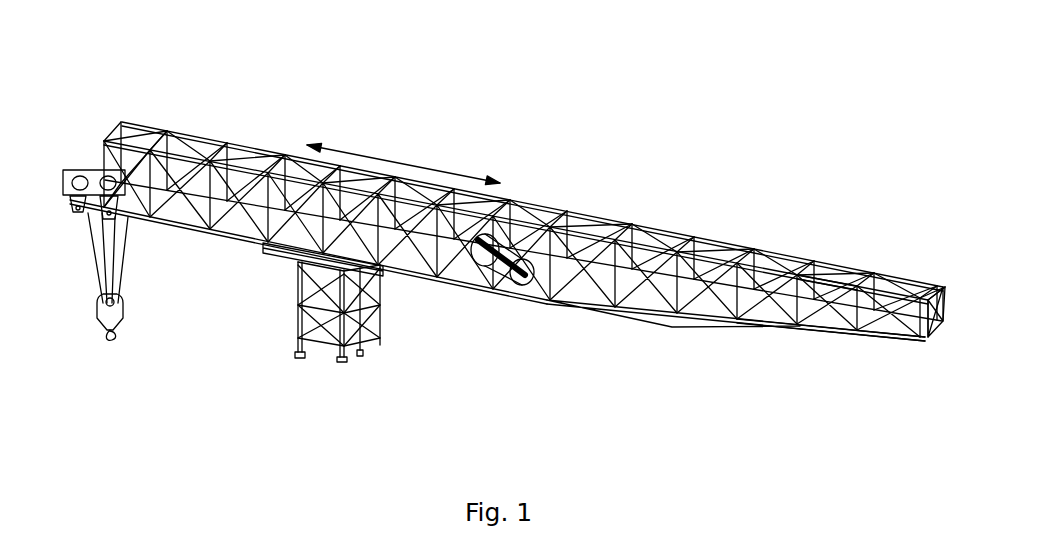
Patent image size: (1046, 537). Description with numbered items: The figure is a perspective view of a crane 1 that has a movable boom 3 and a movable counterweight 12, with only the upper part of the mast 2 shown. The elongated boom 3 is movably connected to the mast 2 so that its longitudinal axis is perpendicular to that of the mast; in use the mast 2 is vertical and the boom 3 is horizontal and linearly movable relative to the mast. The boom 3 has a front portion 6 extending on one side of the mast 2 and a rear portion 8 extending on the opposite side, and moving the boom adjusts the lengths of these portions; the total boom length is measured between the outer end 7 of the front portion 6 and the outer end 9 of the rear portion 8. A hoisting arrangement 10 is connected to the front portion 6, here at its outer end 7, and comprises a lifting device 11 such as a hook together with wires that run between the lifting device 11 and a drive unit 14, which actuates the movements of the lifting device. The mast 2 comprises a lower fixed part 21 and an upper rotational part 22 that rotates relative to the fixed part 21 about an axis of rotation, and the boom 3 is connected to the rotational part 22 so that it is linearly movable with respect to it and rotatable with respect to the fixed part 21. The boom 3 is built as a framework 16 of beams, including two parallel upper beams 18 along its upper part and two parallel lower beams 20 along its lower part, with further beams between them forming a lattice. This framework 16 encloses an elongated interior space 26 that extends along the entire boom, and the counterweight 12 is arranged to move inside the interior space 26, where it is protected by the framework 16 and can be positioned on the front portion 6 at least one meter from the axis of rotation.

The crane 1 is at (497, 128).
The mast 2 is at (385, 310).
The boom 3 is at (665, 227).
The front portion 6 is at (175, 137).
The outer end of the front portion 7 is at (73, 185).
The rear portion 8 is at (768, 250).
The outer end of the rear portion 9 is at (940, 302).
The hoisting arrangement 10 is at (95, 285).
The lifting device 11 is at (108, 337).
The counterweight 12 is at (235, 157).
The drive unit 14 is at (532, 288).
The framework 16 is at (668, 320).
The upper beams 18 is at (832, 263).
The lower beams 20 is at (838, 322).
The fixed part 21 is at (360, 350).
The rotational part 22 is at (297, 243).
The interior space 26 is at (592, 258).